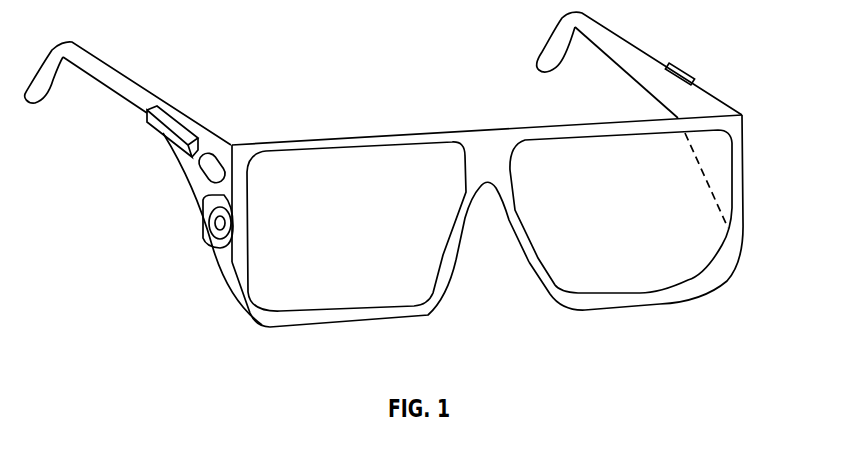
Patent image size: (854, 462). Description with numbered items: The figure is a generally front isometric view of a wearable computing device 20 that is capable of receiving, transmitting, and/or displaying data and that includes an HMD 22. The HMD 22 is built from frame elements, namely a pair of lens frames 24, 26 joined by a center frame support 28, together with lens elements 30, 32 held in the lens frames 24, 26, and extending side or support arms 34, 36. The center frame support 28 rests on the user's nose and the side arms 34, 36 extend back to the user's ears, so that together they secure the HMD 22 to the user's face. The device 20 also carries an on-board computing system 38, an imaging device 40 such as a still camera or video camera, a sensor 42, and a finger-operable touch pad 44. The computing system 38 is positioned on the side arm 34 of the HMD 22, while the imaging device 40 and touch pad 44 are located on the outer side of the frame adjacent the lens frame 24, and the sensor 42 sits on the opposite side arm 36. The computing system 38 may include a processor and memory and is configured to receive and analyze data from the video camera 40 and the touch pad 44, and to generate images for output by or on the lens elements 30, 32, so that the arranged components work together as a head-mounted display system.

The wearable computing device 20 is at (752, 284).
The HMD 22 is at (359, 120).
The lens frame 24 is at (327, 143).
The lens frame 26 is at (562, 127).
The center frame support 28 is at (488, 150).
The lens element 30 is at (298, 288).
The lens element 32 is at (638, 273).
The side arm 34 is at (165, 108).
The side arm 36 is at (643, 53).
The on-board computing system 38 is at (163, 128).
The imaging device 40 is at (203, 215).
The sensor 42 is at (683, 72).
The finger-operable touch pad 44 is at (203, 170).